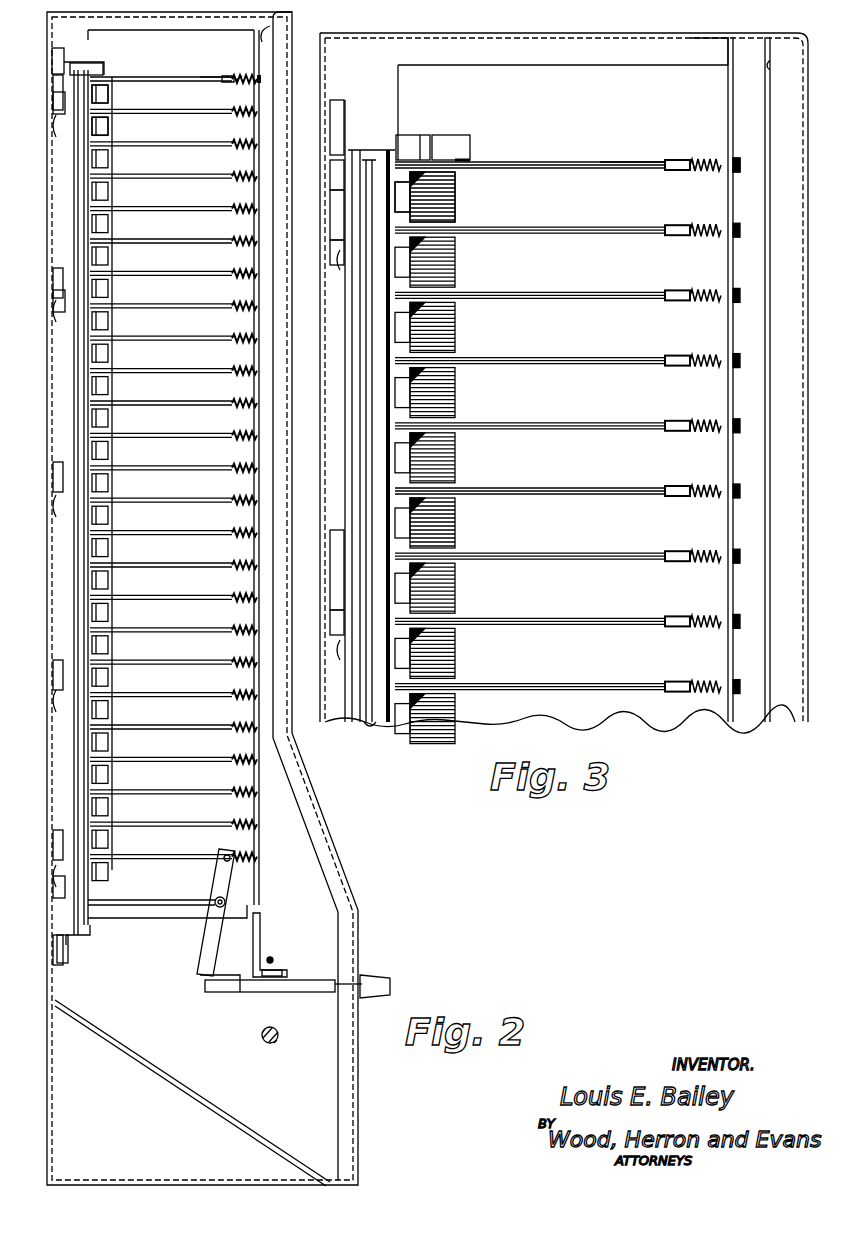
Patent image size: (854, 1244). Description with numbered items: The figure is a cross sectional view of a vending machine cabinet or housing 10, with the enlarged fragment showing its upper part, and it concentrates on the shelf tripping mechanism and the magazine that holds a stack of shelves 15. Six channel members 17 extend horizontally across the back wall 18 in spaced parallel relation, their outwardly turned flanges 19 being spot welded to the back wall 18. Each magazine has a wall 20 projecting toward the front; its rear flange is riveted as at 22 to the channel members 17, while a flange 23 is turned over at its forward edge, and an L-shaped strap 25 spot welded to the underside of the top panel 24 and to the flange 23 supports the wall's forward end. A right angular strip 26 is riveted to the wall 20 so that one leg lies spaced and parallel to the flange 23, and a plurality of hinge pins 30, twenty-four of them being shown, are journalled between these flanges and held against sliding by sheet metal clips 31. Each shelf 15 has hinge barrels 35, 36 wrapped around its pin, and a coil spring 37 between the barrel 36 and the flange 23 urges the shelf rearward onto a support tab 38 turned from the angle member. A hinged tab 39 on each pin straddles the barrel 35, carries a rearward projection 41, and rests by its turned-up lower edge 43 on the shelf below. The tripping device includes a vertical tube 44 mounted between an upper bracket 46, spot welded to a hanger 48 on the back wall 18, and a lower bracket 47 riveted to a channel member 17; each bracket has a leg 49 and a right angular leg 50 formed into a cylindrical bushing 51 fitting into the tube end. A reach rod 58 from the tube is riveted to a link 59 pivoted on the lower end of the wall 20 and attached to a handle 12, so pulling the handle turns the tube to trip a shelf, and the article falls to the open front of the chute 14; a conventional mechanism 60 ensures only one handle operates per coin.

In FIG. 2, the cabinet or housing 10 is at (394, 886).
In FIG. 3, the cabinet or housing 10 is at (514, 28).
In FIG. 2, the handle or knob 12 is at (383, 985).
In FIG. 2, the chute 14 is at (360, 1120).
In FIG. 2, the shelf 15 is at (190, 77).
In FIG. 3, the shelf 15 is at (605, 160).
In FIG. 2, the channel member 17 is at (54, 128).
In FIG. 3, the channel member 17 is at (340, 245).
In FIG. 2, the back wall 18 is at (50, 164).
In FIG. 3, the back wall 18 is at (320, 62).
In FIG. 2, the outwardly turned flange 19 is at (52, 72).
In FIG. 3, the outwardly turned flange 19 is at (328, 150).
In FIG. 2, the wall 20 is at (146, 462).
In FIG. 3, the wall 20 is at (588, 730).
In FIG. 2, the rivet 22 is at (52, 104).
In FIG. 3, the rivet 22 is at (328, 190).
In FIG. 2, the flange 23 is at (254, 58).
In FIG. 3, the flange 23 is at (733, 112).
In FIG. 2, the top panel 24 is at (215, 32).
In FIG. 3, the top panel 24 is at (665, 32).
In FIG. 2, the L-shaped strap 25 is at (275, 38).
In FIG. 3, the L-shaped strap 25 is at (710, 42).
In FIG. 2, the right angular strip 26 is at (108, 66).
In FIG. 3, the right angular strip 26 is at (441, 134).
In FIG. 2, the hinge pin 30 is at (245, 83).
In FIG. 3, the hinge pin 30 is at (639, 166).
In FIG. 2, the sheet metal clip 31 is at (262, 84).
In FIG. 3, the sheet metal clip 31 is at (736, 164).
In FIG. 3, the hinge barrel 35 is at (445, 156).
In FIG. 2, the hinge barrel 36 is at (225, 114).
In FIG. 3, the hinge barrel 36 is at (675, 168).
In FIG. 2, the coil spring 37 is at (245, 116).
In FIG. 3, the coil spring 37 is at (709, 172).
In FIG. 2, the tab 38 is at (108, 87).
In FIG. 3, the tab 38 is at (385, 300).
In FIG. 2, the hinged tab 39 is at (108, 128).
In FIG. 3, the hinged tab 39 is at (464, 206).
In FIG. 3, the projection 41 is at (385, 262).
In FIG. 3, the lower edge 43 is at (455, 219).
In FIG. 2, the vertical tube 44 is at (72, 198).
In FIG. 3, the vertical tube 44 is at (364, 290).
In FIG. 2, the bracket 46 is at (68, 56).
In FIG. 3, the bracket 46 is at (353, 115).
In FIG. 2, the bracket 47 is at (70, 962).
In FIG. 2, the hanger 48 is at (52, 54).
In FIG. 3, the hanger 48 is at (338, 100).
In FIG. 3, the leg 49 is at (352, 130).
In FIG. 3, the right angular leg 50 is at (398, 148).
In FIG. 3, the cylindrical bushing 51 is at (402, 138).
In FIG. 2, the reach rod 58 is at (163, 918).
In FIG. 2, the link 59 is at (215, 940).
In FIG. 2, the conventional mechanism 60 is at (280, 966).